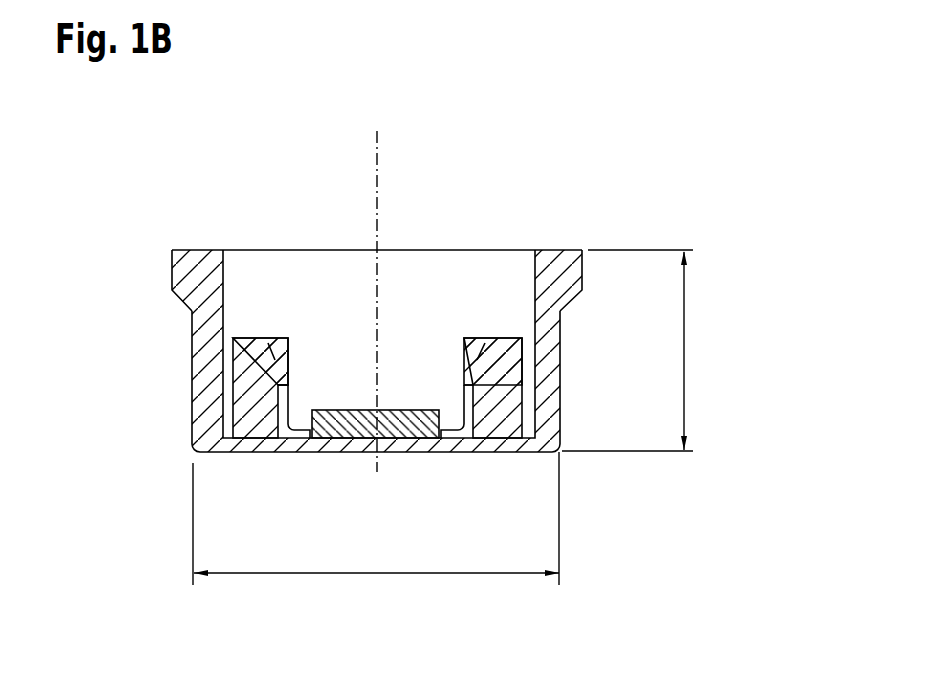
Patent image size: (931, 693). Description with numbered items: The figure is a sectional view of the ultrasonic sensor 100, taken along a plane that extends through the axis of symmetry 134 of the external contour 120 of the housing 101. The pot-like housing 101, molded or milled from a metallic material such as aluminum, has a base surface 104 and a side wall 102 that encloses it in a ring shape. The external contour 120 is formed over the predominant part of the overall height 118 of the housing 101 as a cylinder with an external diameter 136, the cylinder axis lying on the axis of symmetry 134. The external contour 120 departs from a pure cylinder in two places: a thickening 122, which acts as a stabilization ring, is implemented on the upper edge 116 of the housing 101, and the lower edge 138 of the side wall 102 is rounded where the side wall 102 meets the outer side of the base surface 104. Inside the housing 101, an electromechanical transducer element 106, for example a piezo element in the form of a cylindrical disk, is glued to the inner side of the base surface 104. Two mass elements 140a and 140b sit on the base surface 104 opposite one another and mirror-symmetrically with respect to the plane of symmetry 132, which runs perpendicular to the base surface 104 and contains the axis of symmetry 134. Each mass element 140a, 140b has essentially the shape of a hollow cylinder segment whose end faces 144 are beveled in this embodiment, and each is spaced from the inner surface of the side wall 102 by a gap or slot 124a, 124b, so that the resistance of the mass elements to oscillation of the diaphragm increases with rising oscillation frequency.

The ultrasonic sensor 100 is at (158, 200).
The housing 101 is at (495, 452).
The side wall 102 is at (561, 333).
The base surface 104 is at (299, 441).
The electromechanical transducer element 106 is at (429, 430).
The upper edge 116 is at (562, 251).
The overall height 118 is at (687, 343).
The external contour 120 is at (574, 407).
The thickening 122 is at (563, 270).
The gap 124a is at (525, 374).
The gap 124b is at (232, 373).
The plane of symmetry 132 is at (377, 138).
The axis of symmetry 134 is at (446, 300).
The external diameter 136 is at (362, 573).
The lower edge 138 is at (185, 462).
The mass element 140a is at (500, 377).
The mass element 140b is at (258, 365).
The end faces 144 is at (275, 360).